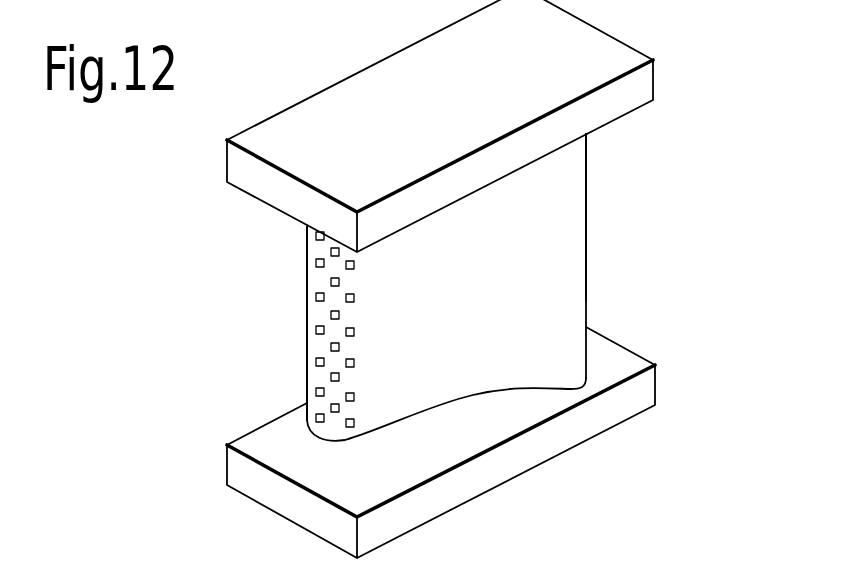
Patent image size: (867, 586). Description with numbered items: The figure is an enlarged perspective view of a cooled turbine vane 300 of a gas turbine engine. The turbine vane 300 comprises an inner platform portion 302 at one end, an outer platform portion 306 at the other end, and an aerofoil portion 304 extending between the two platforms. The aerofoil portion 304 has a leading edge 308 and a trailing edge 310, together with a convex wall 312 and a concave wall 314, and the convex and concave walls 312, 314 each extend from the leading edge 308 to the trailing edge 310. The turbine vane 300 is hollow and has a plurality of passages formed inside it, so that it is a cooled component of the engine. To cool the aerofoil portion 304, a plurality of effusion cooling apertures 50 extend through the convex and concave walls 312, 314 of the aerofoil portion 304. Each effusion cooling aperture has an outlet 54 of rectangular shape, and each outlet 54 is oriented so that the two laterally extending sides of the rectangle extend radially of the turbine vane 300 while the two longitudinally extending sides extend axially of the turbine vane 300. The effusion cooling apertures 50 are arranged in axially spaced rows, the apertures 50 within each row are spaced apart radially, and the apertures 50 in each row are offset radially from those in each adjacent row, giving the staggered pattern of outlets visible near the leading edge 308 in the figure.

The turbine vane 300 is at (672, 174).
The inner platform portion 302 is at (612, 363).
The aerofoil portion 304 is at (565, 227).
The outer platform portion 306 is at (637, 83).
The leading edge 308 is at (307, 278).
The trailing edge 310 is at (587, 163).
The convex wall 312 is at (307, 252).
The concave wall 314 is at (458, 327).
The effusion cooling apertures 50 is at (332, 377).
The outlet 54 is at (333, 315).